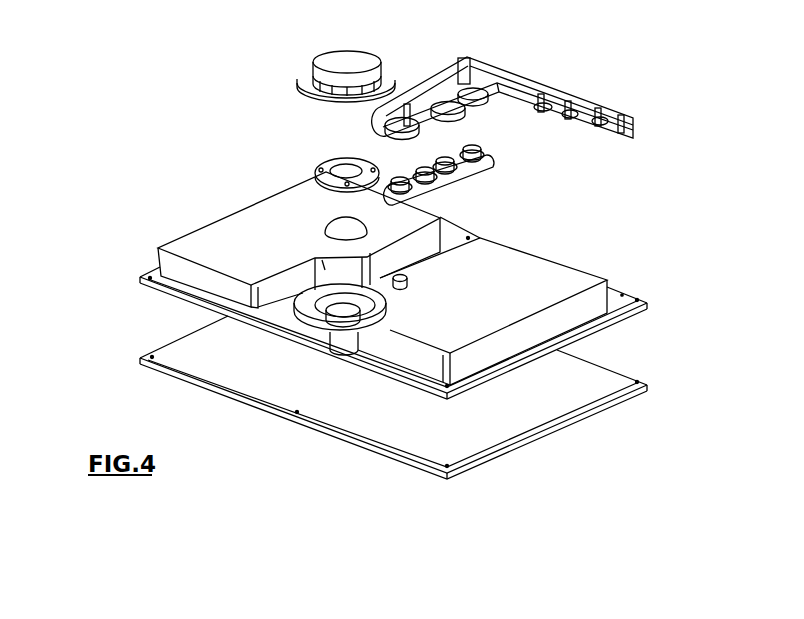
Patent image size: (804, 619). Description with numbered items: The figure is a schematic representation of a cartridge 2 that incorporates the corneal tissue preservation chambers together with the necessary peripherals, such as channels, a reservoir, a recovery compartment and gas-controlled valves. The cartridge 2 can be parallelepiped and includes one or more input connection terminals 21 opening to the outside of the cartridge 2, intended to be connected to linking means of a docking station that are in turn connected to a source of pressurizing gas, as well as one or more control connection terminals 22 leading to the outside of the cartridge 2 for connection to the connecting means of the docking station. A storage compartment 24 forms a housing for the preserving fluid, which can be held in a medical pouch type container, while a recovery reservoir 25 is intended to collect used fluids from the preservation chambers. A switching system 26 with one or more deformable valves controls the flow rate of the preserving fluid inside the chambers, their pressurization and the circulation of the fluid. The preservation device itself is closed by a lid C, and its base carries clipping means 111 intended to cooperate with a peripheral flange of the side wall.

The cartridge 2 is at (184, 203).
The input connection terminal 21 is at (552, 88).
The control connection terminal 22 is at (575, 112).
The storage compartment 24 is at (272, 222).
The recovery reservoir 25 is at (555, 295).
The switching system 26 is at (539, 144).
The clipping means 111 is at (320, 290).
The lid C is at (350, 67).